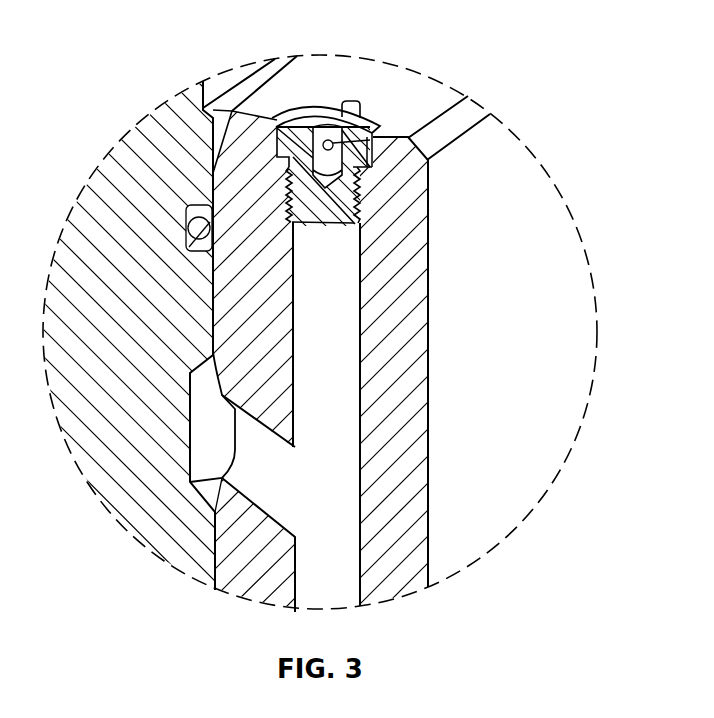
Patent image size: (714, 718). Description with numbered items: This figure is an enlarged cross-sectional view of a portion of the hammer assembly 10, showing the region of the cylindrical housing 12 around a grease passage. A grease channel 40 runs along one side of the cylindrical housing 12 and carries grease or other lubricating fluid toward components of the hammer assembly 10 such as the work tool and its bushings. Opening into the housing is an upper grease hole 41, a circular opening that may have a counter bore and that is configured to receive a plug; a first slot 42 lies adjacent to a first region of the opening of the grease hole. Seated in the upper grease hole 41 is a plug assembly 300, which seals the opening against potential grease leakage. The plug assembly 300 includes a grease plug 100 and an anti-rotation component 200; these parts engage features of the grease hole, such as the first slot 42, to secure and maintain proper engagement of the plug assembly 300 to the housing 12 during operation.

The hammer assembly 10 is at (556, 80).
The cylindrical housing 12 is at (572, 296).
The grease channel 40 is at (338, 377).
The upper grease hole 41 is at (320, 102).
The first slot 42 is at (353, 101).
The grease plug 100 is at (342, 212).
The anti-rotation component 200 is at (376, 134).
The plug assembly 300 is at (392, 170).